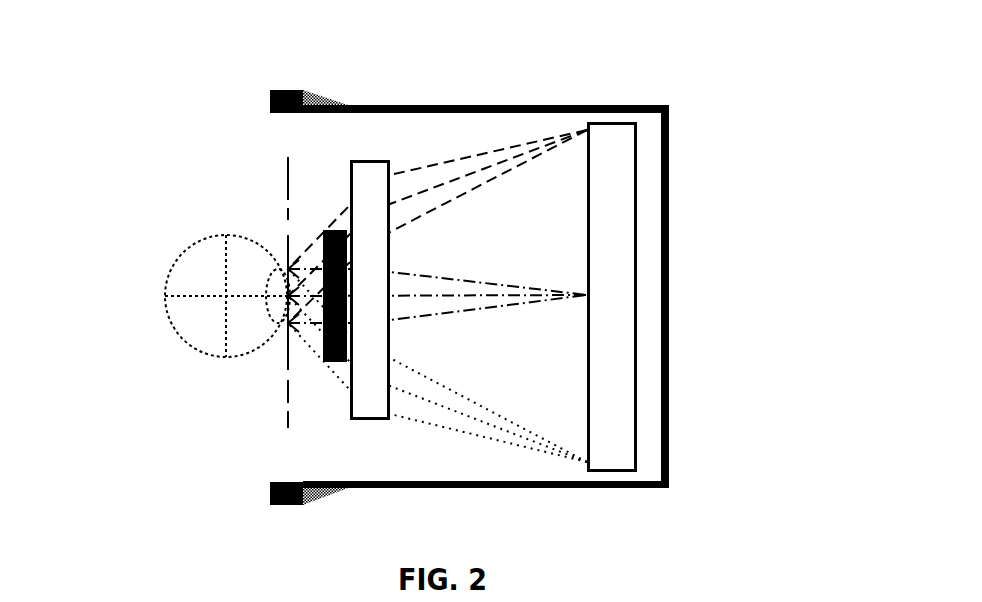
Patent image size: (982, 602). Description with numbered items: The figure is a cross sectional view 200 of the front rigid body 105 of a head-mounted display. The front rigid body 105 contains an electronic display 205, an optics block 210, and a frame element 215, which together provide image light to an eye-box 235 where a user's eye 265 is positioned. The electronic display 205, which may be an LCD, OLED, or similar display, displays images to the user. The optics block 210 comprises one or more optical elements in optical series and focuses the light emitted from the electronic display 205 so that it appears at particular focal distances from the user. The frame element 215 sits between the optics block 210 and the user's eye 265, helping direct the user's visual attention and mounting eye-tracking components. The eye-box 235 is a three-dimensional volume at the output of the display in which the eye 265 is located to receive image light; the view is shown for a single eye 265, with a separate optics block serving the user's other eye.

The cross sectional view 200 is at (110, 27).
The front rigid body 105 is at (605, 105).
The electronic display 205 is at (637, 297).
The optics block 210 is at (350, 160).
The frame element 215 is at (325, 230).
The eye-box 235 is at (288, 428).
The eye 265 is at (226, 357).